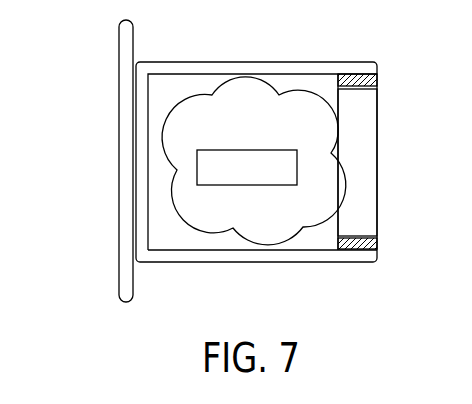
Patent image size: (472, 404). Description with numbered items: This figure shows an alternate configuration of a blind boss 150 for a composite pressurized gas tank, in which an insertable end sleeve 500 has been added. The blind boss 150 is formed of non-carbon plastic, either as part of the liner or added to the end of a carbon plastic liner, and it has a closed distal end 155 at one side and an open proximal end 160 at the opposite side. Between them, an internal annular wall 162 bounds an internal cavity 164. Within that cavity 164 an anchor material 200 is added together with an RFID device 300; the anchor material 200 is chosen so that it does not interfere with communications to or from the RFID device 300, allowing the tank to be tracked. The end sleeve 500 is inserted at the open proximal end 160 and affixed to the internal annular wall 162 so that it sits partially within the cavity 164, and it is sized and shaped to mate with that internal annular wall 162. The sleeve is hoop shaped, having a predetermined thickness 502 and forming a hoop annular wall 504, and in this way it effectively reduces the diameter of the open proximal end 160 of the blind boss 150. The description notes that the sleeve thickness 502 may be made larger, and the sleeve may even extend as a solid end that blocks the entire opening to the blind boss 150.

The blind boss 150 is at (222, 50).
The closed distal end 155 is at (146, 145).
The open proximal end 160 is at (391, 190).
The internal annular wall 162 is at (158, 250).
The internal cavity 164 is at (190, 98).
The anchor material 200 is at (288, 134).
The RFID device 300 is at (247, 178).
The insertable end sleeve 500 is at (384, 80).
The predetermined thickness 502 is at (378, 243).
The hoop annular wall 504 is at (346, 135).